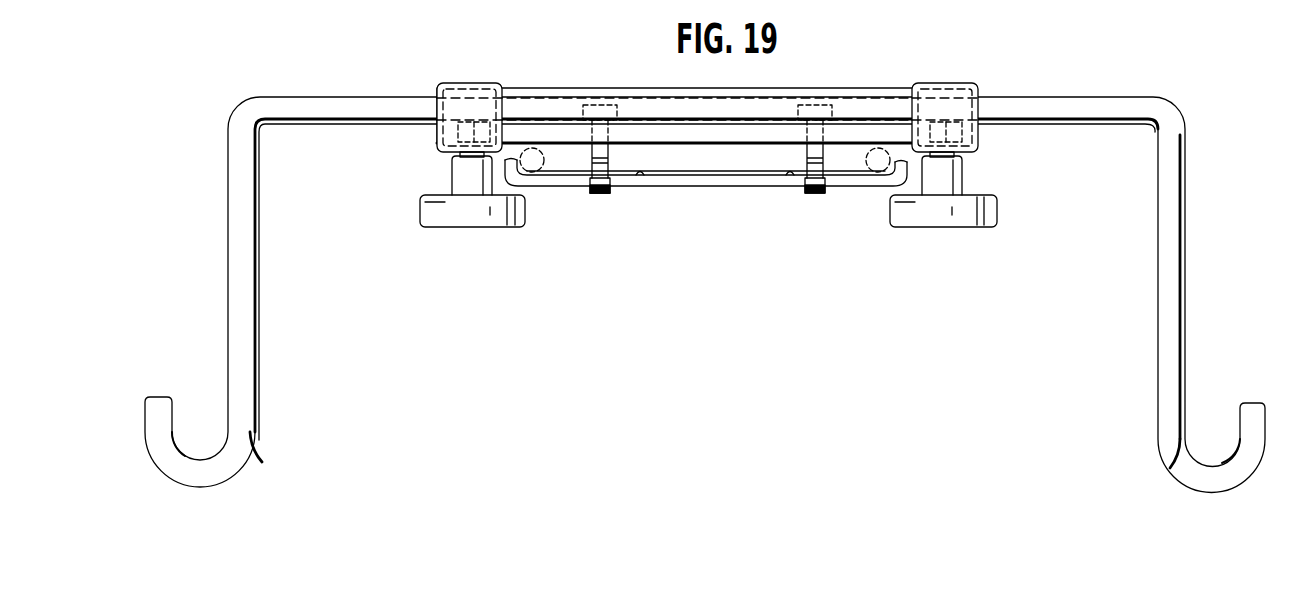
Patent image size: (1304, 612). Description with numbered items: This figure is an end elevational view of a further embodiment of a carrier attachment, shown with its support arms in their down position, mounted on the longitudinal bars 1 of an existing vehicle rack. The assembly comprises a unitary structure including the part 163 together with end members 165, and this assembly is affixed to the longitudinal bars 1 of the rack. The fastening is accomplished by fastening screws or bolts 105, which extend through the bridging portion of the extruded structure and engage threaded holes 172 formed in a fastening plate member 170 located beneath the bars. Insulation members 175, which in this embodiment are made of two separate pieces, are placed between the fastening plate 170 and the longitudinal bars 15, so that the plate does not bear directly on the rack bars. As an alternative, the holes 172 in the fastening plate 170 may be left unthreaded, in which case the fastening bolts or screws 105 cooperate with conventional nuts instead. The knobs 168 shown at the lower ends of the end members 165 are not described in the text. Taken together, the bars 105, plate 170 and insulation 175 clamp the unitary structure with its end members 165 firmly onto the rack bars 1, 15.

The longitudinal bar 1 is at (247, 303).
The longitudinal bar 15 is at (536, 175).
The fastening screw or bolt 105 is at (608, 153).
The unitary structure part 163 is at (872, 103).
The end member 165 is at (470, 80).
The knob 168 is at (425, 208).
The fastening plate member 170 is at (715, 190).
The threaded hole 172 is at (615, 190).
The insulation member 175 is at (641, 176).